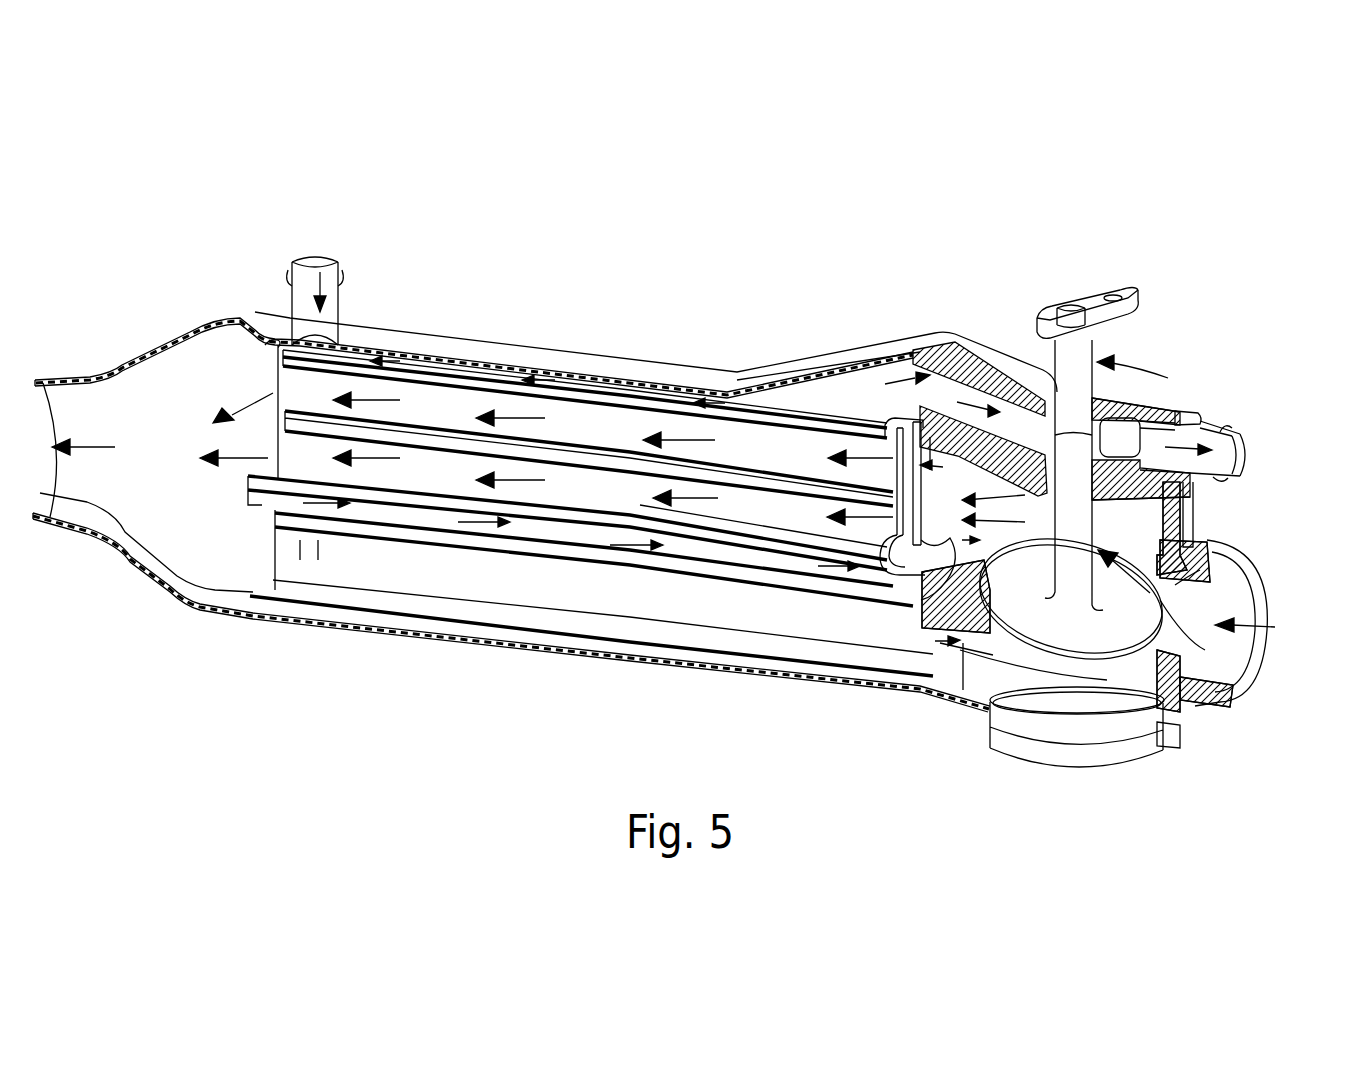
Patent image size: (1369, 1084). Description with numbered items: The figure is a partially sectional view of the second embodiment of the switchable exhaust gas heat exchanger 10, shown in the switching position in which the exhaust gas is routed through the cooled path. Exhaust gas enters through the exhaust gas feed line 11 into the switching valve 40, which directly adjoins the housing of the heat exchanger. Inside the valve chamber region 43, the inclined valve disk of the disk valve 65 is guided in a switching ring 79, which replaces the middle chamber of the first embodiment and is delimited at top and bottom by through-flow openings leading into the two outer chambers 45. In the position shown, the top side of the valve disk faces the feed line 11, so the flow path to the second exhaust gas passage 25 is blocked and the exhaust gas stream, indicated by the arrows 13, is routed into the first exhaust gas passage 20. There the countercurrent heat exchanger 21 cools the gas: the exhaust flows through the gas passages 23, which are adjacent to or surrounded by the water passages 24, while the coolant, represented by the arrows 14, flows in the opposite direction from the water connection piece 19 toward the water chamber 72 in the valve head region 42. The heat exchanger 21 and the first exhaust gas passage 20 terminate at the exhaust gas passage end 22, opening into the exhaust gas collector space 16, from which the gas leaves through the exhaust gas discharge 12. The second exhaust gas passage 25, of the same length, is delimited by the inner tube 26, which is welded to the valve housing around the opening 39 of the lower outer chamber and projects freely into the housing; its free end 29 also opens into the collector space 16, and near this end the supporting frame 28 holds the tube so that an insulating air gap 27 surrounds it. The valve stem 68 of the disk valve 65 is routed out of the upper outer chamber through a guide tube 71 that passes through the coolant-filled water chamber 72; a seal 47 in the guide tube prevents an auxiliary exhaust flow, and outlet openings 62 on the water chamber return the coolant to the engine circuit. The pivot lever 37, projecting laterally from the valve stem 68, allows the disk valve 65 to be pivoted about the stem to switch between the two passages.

The switchable exhaust gas heat exchanger 10 is at (528, 302).
The exhaust gas feed line 11 is at (1240, 585).
The exhaust gas discharge 12 is at (87, 487).
The arrows (exhaust gas stream) 13 is at (100, 450).
The arrows (coolant flow) 14 is at (363, 355).
The exhaust gas collector space 16 is at (178, 476).
The water connection piece 19 is at (300, 298).
The first exhaust gas passage 20 is at (930, 437).
The heat exchanger 21 is at (820, 403).
The exhaust gas passage end 22 is at (265, 343).
The gas passages 23 is at (883, 450).
The water passages 24 is at (575, 520).
The second exhaust gas passage 25 is at (603, 623).
The inner tube 26 is at (515, 610).
The air gap 27 is at (443, 540).
The supporting frame 28 is at (317, 543).
The free end 29 is at (253, 530).
The pivot lever 37 is at (1092, 305).
The opening 39 is at (907, 440).
The switching valve 40 is at (1192, 349).
The valve head region 42 is at (1256, 400).
The valve chamber region 43 is at (1256, 704).
The outer chambers 45 is at (1140, 545).
The seal 47 is at (1240, 466).
The outlet openings 62 is at (1227, 450).
The disk valve 65 is at (1151, 372).
The valve stem 68 is at (1058, 528).
The guide tube 71 is at (1180, 503).
The water chamber 72 is at (963, 387).
The switching ring 79 is at (963, 692).